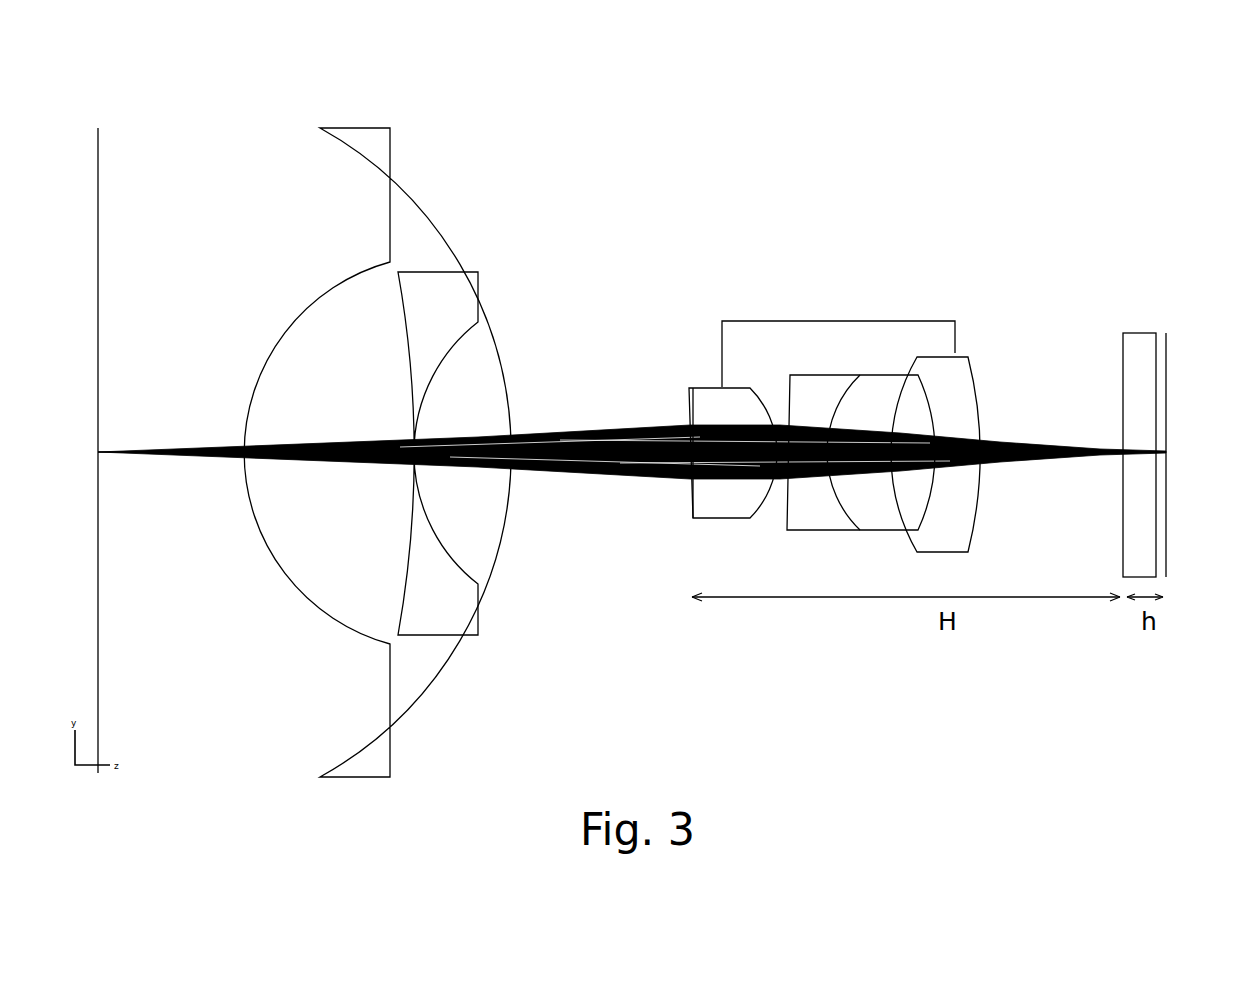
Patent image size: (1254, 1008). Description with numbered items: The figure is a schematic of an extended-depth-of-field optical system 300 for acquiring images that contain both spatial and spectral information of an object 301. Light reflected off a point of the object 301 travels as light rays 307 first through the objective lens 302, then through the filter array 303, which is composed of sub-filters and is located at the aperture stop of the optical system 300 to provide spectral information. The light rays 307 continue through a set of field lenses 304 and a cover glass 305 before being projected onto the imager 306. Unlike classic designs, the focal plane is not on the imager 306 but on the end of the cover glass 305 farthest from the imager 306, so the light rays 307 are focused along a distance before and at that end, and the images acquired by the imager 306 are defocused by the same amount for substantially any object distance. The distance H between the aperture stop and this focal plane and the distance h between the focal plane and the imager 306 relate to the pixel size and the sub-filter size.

The optical system 300 is at (738, 178).
The object 301 is at (98, 168).
The objective lens 302 is at (447, 278).
The filter array 303 is at (693, 388).
The set of field lenses 304 is at (862, 321).
The cover glass 305 is at (1135, 332).
The imager 306 is at (1167, 350).
The light rays 307 is at (563, 437).